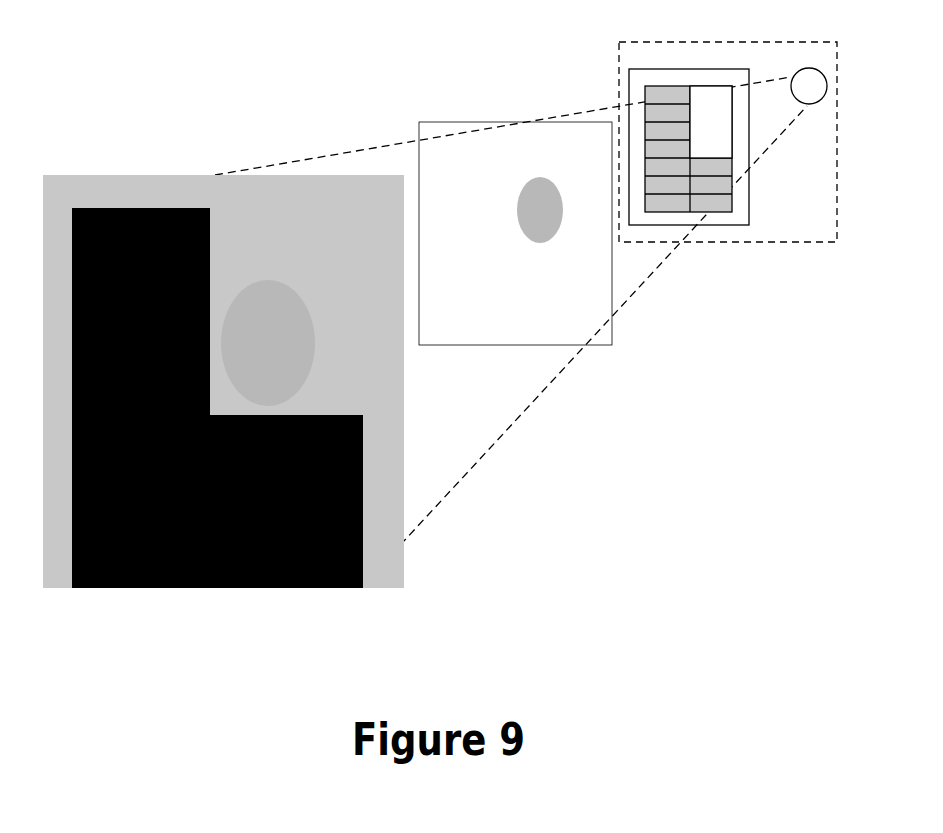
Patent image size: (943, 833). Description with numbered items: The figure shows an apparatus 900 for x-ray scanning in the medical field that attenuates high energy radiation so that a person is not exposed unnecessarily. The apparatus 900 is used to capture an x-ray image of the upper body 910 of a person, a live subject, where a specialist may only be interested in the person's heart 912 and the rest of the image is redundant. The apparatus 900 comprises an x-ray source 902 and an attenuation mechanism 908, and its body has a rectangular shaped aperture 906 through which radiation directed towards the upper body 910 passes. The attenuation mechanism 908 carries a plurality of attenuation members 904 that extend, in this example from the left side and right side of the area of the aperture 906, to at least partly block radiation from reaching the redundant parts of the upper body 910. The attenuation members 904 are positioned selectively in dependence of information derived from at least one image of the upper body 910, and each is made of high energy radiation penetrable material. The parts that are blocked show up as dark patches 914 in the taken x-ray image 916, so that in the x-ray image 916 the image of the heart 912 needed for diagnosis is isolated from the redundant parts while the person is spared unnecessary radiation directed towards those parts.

The apparatus 900 is at (690, 157).
The x-ray source 902 is at (805, 106).
The attenuation members 904 is at (673, 123).
The aperture 906 is at (707, 100).
The attenuation mechanism 908 is at (723, 225).
The upper body 910 is at (518, 340).
The heart 912 is at (517, 208).
The dark patches 914 is at (288, 588).
The x-ray image 916 is at (175, 192).